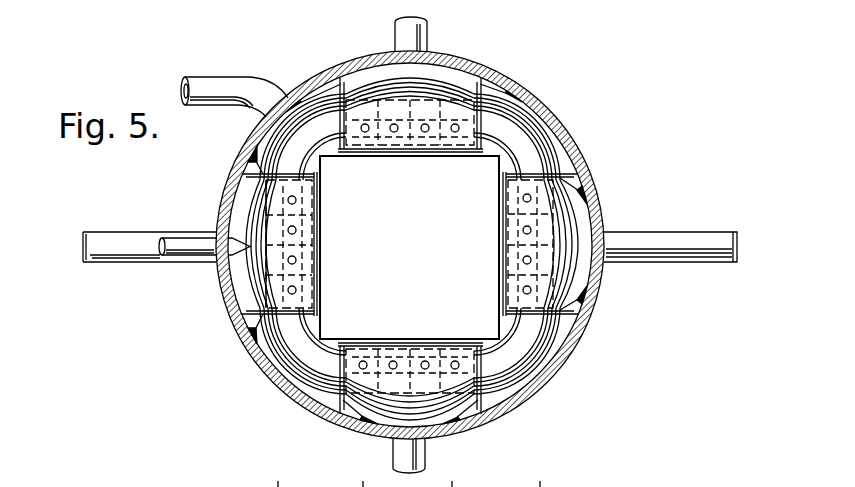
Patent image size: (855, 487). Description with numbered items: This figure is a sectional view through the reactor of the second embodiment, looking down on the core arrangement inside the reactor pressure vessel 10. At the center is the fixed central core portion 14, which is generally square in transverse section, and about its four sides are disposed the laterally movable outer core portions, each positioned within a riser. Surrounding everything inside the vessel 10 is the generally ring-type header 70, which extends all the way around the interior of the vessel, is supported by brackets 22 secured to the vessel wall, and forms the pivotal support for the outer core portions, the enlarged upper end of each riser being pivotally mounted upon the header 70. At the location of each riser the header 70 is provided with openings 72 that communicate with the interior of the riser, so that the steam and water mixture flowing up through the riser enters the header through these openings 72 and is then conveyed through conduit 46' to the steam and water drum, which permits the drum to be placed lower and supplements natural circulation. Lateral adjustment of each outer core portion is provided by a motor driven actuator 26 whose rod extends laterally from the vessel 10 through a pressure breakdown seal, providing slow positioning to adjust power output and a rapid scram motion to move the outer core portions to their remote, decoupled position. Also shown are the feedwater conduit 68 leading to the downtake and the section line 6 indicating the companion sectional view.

The reactor pressure vessel 10 is at (595, 187).
The fixed central core portion 14 is at (345, 309).
The brackets 22 is at (318, 147).
The motor driven actuator 26 is at (430, 33).
The conduit 46' is at (234, 77).
The conduit 68 is at (196, 257).
The ring-type header 70 is at (498, 138).
The openings 72 is at (296, 290).
The section line 6- 6 is at (65, 245).